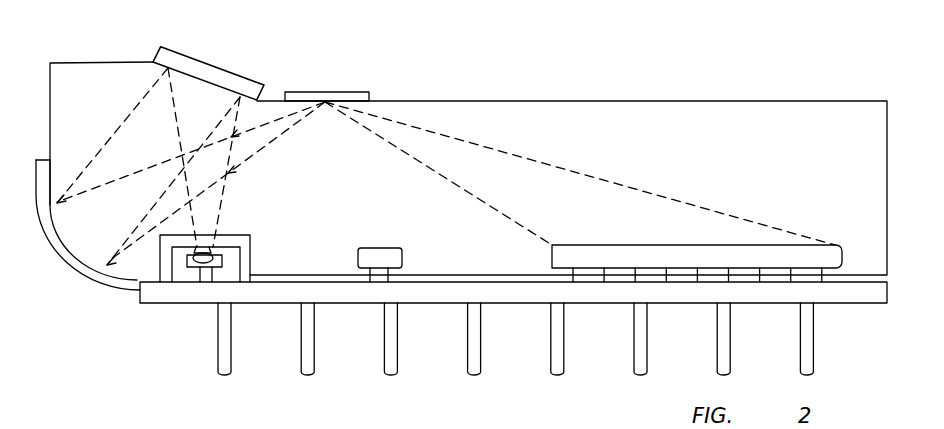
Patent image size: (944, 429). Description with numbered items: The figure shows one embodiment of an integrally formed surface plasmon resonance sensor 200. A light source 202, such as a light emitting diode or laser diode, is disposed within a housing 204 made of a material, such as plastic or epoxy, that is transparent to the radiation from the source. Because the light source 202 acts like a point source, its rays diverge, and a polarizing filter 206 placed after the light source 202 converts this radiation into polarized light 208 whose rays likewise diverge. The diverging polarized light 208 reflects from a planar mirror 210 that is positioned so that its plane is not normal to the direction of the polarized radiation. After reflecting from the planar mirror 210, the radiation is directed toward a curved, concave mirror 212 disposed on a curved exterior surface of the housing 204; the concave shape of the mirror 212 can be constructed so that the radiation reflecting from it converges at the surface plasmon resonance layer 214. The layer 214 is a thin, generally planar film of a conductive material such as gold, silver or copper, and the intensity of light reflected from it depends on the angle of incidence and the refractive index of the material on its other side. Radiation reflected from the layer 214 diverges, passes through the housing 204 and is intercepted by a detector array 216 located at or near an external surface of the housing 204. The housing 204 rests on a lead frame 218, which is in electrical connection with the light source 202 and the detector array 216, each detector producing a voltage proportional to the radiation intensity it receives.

The integrally formed surface plasmon resonance sensor 200 is at (714, 83).
The light source 202 is at (200, 268).
The housing 204 is at (572, 105).
The polarizing filter 206 is at (230, 231).
The polarized light 208 is at (222, 195).
The planar mirror 210 is at (212, 62).
The curved mirror 212 is at (88, 278).
The surface plasmon resonance layer 214 is at (325, 92).
The detector array 216 is at (620, 245).
The lead frame 218 is at (840, 298).